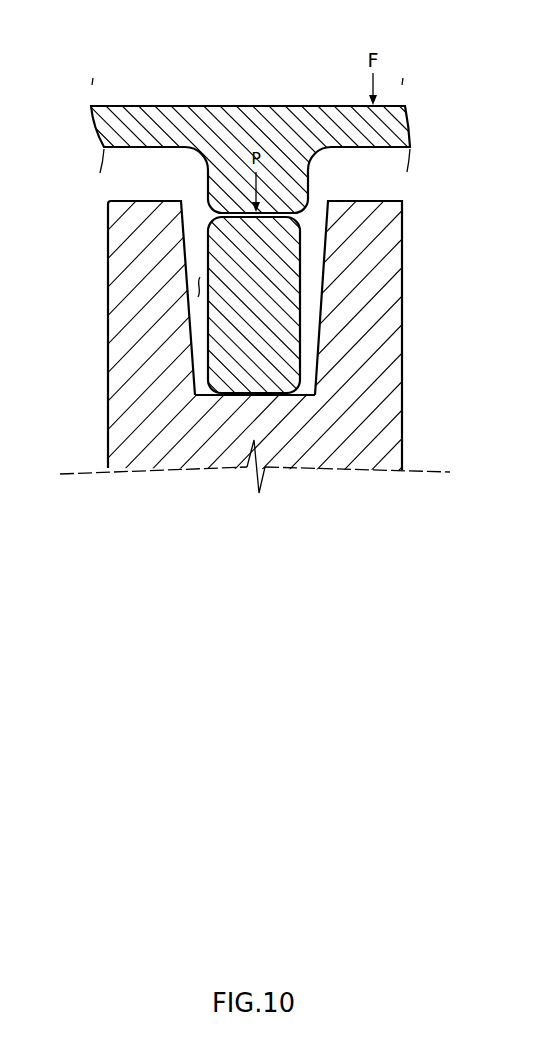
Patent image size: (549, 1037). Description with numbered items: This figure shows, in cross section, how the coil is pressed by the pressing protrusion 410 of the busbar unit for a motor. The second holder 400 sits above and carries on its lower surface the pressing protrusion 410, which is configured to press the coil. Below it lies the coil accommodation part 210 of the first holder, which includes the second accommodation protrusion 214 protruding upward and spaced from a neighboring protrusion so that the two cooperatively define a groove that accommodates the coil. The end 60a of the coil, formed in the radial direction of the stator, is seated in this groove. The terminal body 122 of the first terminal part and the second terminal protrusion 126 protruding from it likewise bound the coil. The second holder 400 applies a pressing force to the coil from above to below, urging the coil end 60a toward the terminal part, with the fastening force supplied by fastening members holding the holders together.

The second holder 400 is at (180, 114).
The pressing protrusion 410 is at (309, 186).
The terminal body 122 is at (132, 260).
The second terminal protrusion 126 is at (197, 289).
The second accommodation protrusion 214 is at (383, 266).
The coil accommodation part 210 is at (405, 318).
The end of the coil 60a is at (287, 341).